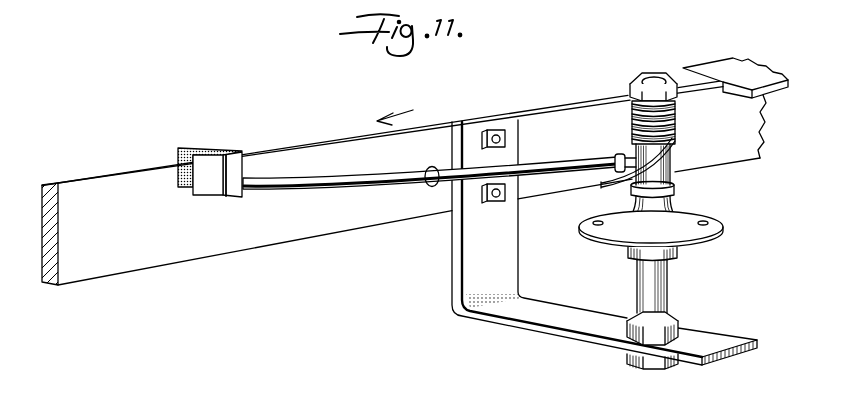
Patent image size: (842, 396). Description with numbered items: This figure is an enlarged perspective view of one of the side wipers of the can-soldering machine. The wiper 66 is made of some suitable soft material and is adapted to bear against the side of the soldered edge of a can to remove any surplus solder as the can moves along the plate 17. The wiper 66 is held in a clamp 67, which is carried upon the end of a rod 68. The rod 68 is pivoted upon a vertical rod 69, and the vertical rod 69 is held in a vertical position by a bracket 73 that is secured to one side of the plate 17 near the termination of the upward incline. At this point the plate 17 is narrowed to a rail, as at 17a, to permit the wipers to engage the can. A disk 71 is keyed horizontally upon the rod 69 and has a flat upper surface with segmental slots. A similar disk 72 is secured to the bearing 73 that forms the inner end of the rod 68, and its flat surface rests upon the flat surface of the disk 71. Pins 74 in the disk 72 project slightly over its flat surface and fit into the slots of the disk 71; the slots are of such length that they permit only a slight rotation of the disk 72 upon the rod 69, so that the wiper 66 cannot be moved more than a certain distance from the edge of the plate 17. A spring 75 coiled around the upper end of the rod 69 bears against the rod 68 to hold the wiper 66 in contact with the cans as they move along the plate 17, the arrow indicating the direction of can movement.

The plate 17 is at (398, 205).
The rail 17a is at (710, 76).
The wiper 66 is at (189, 153).
The clamp 67 is at (208, 187).
The rod 68 is at (334, 181).
The vertical rod 69 is at (666, 283).
The disk 71 is at (714, 241).
The disk 72 is at (693, 213).
The bracket 73 is at (675, 188).
The pins 74 is at (595, 223).
The spring 75 is at (676, 127).